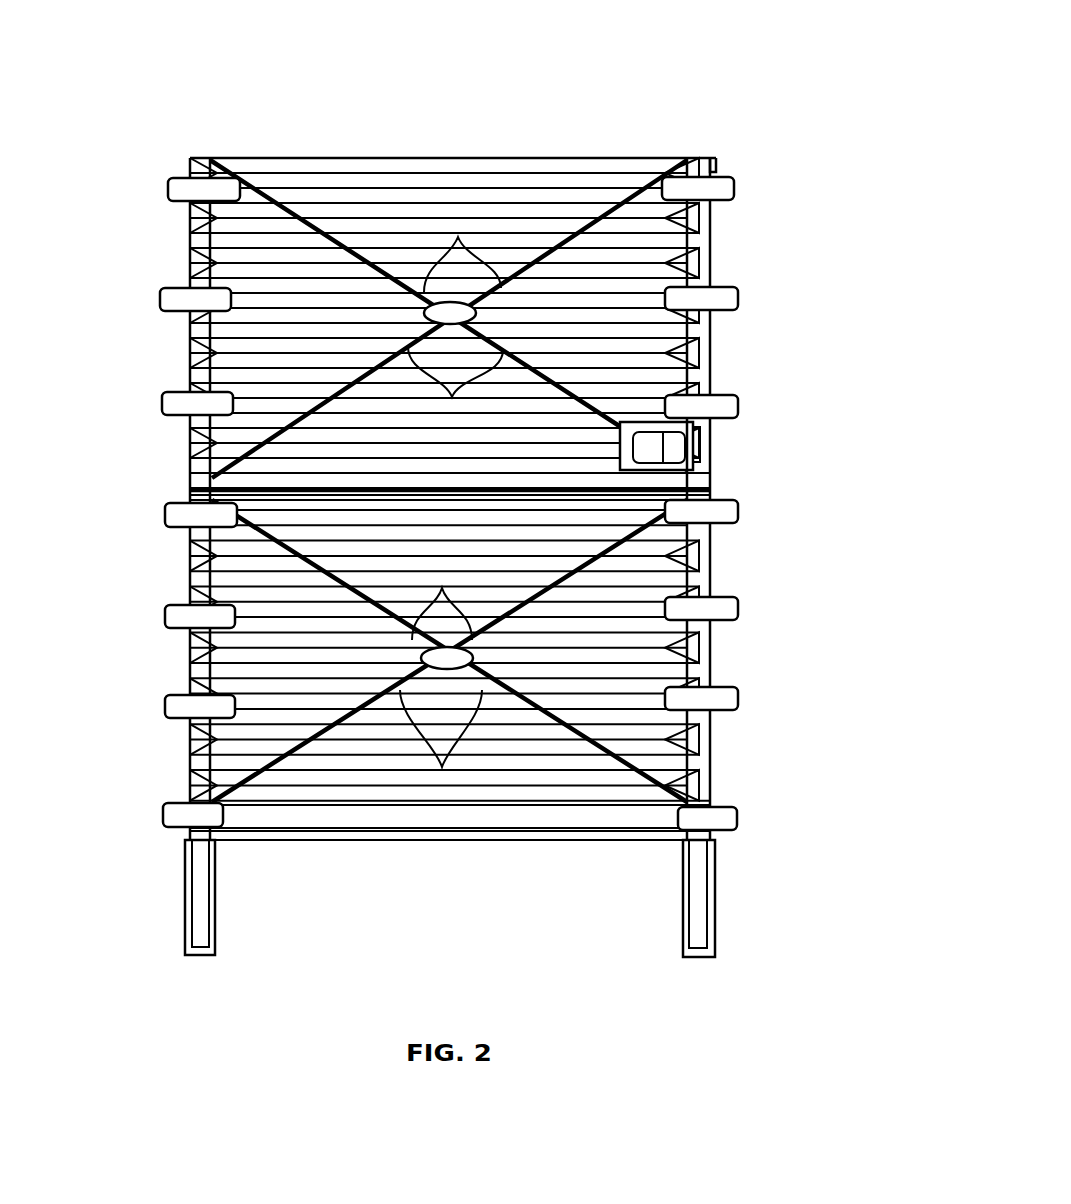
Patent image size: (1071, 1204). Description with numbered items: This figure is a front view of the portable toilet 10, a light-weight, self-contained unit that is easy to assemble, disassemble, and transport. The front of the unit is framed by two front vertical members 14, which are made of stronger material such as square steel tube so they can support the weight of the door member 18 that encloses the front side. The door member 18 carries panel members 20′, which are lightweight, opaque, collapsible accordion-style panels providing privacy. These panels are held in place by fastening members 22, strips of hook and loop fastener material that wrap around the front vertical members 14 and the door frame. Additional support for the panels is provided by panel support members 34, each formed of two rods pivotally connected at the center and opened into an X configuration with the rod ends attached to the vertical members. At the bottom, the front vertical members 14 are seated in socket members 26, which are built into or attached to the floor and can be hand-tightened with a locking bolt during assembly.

The portable toilet 10 is at (675, 43).
The front vertical members 14 is at (199, 156).
The door member 18 is at (650, 272).
The panel members 20′ is at (469, 454).
The fastening members 22 is at (168, 189).
The socket members 26 is at (185, 903).
The panel support members 34 is at (451, 501).